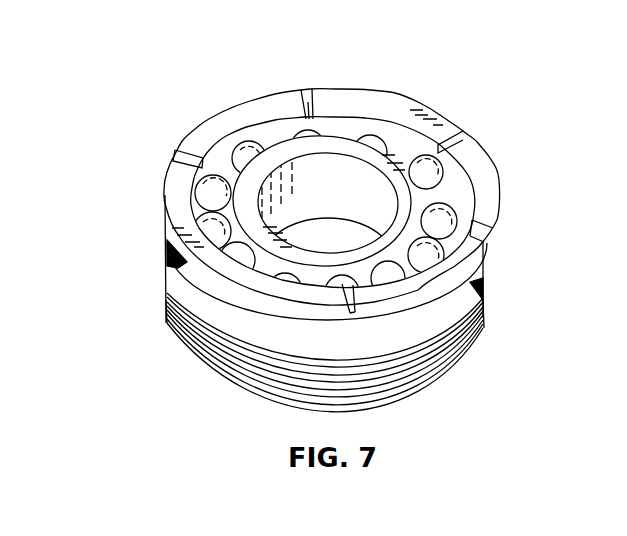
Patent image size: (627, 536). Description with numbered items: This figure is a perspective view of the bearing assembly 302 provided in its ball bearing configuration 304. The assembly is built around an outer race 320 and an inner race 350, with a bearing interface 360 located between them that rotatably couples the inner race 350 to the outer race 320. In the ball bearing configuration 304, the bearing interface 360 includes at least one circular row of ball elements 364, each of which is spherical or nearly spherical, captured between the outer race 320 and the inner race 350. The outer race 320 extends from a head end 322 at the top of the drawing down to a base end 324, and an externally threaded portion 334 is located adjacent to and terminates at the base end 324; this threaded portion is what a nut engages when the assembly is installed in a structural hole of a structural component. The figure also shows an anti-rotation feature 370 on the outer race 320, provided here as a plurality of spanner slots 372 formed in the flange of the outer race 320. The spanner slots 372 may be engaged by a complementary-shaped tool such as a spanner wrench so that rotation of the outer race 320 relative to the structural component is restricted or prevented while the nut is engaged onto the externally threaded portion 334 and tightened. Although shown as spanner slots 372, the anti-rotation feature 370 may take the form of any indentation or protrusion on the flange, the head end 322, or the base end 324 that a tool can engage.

The bearing assembly 302 is at (464, 92).
The ball bearing configuration 304 is at (340, 221).
The outer race 320 is at (448, 127).
The head end 322 is at (397, 100).
The base end 324 is at (460, 368).
The externally threaded portion 334 is at (484, 326).
The inner race 350 is at (406, 180).
The bearing interface 360 is at (208, 185).
The ball elements 364 is at (444, 256).
The anti-rotation feature 370 is at (308, 88).
The spanner slots 372 is at (333, 172).